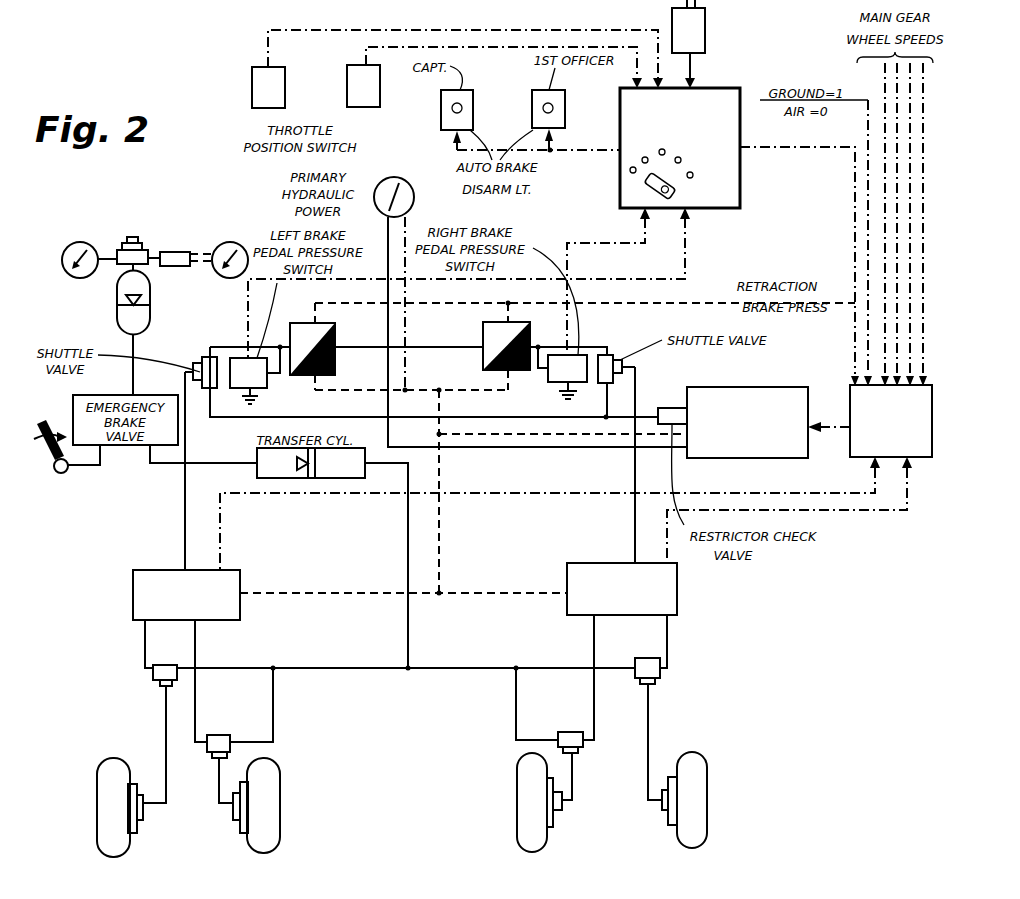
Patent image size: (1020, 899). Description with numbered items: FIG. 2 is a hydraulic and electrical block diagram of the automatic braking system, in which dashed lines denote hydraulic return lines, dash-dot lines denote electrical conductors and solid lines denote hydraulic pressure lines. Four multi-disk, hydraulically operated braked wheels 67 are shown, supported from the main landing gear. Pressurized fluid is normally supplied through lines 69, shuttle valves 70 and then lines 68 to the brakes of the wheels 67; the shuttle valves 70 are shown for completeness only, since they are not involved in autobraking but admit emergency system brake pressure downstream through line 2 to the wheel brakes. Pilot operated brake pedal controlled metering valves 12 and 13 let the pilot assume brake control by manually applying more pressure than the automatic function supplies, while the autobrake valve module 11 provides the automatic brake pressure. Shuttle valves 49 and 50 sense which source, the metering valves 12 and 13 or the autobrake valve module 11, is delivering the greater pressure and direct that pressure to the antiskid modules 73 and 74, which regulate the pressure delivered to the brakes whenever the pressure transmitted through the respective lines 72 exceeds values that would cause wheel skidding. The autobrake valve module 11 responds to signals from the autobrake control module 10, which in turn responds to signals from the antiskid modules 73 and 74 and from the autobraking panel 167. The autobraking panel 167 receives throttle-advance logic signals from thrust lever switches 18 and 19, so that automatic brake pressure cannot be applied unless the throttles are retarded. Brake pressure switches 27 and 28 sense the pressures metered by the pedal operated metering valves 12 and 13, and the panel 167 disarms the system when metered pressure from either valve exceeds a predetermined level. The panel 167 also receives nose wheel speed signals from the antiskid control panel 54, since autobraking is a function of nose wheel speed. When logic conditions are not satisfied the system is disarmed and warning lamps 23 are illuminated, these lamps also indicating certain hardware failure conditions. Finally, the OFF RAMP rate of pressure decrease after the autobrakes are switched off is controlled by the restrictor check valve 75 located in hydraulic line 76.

The line 2 is at (408, 636).
The autobrake control module 10 is at (928, 458).
The autobrake valve module 11 is at (760, 387).
The metering valve 12 is at (336, 328).
The metering valve 13 is at (530, 324).
The thrust lever switch 18 is at (286, 107).
The thrust lever switch 19 is at (381, 106).
The warning lamps 23 is at (473, 90).
The brake pressure switch 27 is at (551, 382).
The brake pressure switch 28 is at (262, 388).
The shuttle valve 49 is at (196, 357).
The shuttle valve 50 is at (614, 356).
The antiskid control panel 54 is at (705, 12).
The braked wheels 67 is at (97, 793).
The lines 68 is at (166, 730).
The lines 69 is at (145, 652).
The shuttle valves 70 is at (165, 665).
The lines 72 is at (185, 528).
The antiskid module 73 is at (240, 571).
The antiskid module 74 is at (567, 565).
The restrictor check valve 75 is at (668, 408).
The hydraulic line 76 is at (628, 418).
The autobraking panel 167 is at (551, 219).